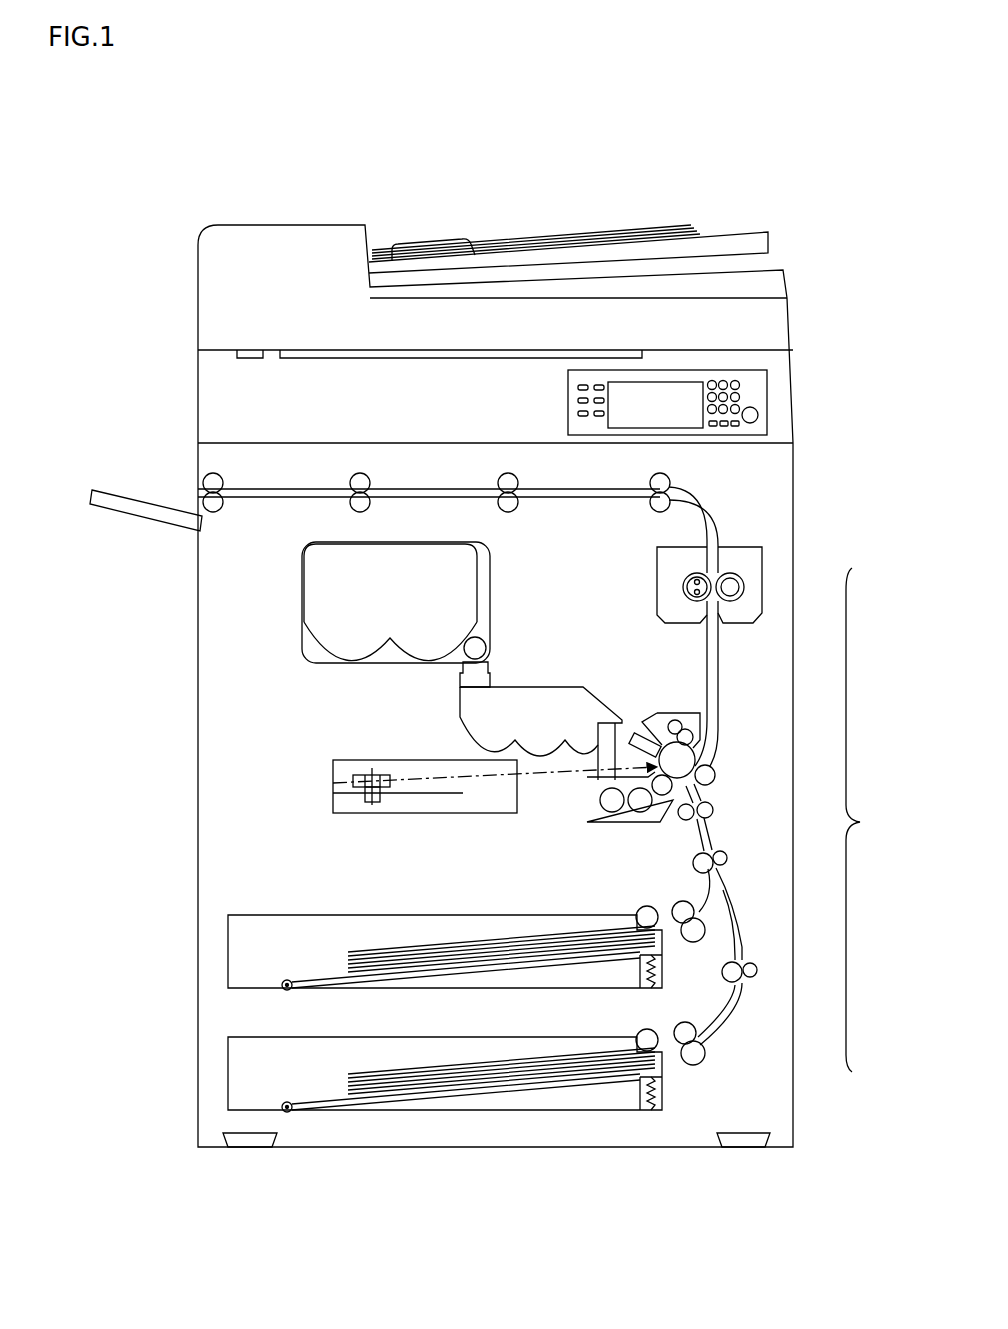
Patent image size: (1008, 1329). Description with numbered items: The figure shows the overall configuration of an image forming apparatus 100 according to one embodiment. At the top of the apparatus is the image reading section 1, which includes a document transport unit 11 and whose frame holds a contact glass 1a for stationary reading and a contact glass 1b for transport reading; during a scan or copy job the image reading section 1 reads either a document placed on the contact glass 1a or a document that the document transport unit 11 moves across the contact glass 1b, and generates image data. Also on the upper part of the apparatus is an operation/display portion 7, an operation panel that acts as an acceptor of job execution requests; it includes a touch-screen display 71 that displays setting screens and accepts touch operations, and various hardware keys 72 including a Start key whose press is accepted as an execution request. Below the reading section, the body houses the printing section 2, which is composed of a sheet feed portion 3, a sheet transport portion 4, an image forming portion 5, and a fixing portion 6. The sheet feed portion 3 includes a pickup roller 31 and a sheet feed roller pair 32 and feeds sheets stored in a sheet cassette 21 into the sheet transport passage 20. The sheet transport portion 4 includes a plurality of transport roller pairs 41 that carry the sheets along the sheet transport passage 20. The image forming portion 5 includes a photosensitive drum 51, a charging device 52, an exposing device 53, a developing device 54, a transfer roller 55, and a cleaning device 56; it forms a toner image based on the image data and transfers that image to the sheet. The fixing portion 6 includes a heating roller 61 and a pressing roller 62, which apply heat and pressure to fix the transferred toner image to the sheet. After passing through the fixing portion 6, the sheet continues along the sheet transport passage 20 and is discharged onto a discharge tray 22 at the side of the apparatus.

The image forming apparatus 100 is at (203, 222).
The image reading section 1 is at (797, 418).
The contact glass for stationary reading 1a is at (328, 353).
The contact glass for transport reading 1b is at (252, 353).
The document transport unit 11 is at (207, 300).
The operation/display portion 7 is at (565, 404).
The touch-screen display 71 is at (665, 392).
The hardware keys 72 is at (750, 406).
The printing section 2 is at (863, 820).
The sheet transport passage 20 is at (582, 500).
The sheet cassette 21 is at (273, 915).
The discharge tray 22 is at (148, 515).
The sheet feed portion 3 is at (708, 1055).
The pickup roller 31 is at (650, 906).
The sheet feed roller pair 32 is at (681, 1022).
The sheet transport portion 4 is at (760, 966).
The transport roller pairs 41 is at (220, 508).
The image forming portion 5 is at (718, 766).
The photosensitive drum 51 is at (663, 745).
The charging device 52 is at (641, 734).
The exposing device 53 is at (333, 780).
The developing device 54 is at (588, 792).
The transfer roller 55 is at (716, 777).
The cleaning device 56 is at (682, 713).
The fixing portion 6 is at (766, 590).
The heating roller 61 is at (683, 587).
The pressing roller 62 is at (731, 573).